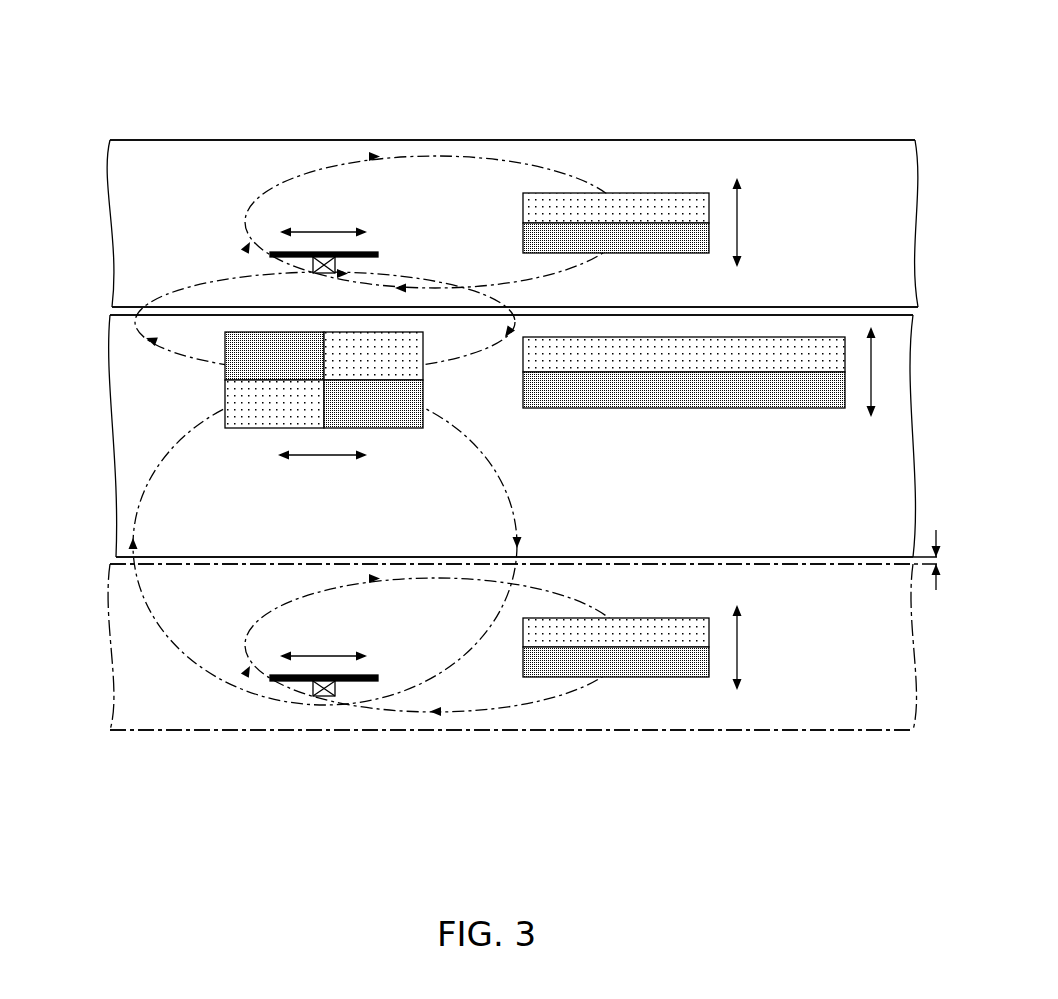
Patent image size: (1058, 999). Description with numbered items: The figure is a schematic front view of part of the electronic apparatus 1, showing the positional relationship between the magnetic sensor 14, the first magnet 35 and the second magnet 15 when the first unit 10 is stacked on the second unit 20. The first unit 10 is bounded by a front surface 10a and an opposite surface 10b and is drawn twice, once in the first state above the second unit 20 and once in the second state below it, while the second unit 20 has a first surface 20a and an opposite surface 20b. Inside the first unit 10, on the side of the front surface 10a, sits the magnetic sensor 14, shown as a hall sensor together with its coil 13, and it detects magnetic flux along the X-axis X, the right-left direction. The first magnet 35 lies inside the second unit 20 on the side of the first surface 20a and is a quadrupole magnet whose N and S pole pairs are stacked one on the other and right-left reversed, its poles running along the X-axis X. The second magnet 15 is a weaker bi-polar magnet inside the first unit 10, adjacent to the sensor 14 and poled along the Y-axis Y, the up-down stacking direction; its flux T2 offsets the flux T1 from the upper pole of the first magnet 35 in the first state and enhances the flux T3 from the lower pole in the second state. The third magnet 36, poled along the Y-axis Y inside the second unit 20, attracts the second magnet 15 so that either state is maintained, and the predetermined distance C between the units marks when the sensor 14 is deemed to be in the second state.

The electronic apparatus 1 is at (178, 104).
The first unit 10 is at (118, 258).
The front surface 10a is at (132, 316).
The upper surface of plate 10 10b is at (145, 140).
The coil 13 is at (370, 252).
The magnetic sensor 14 is at (335, 263).
The second magnet 15 is at (645, 193).
The second unit 20 is at (110, 435).
The first surface 20a is at (843, 315).
The lower surface of plate 20 20b is at (833, 565).
The first magnet 35 is at (225, 385).
The third magnet 36 is at (660, 408).
The predetermined distance C is at (940, 560).
The magnetic flux T1 is at (185, 290).
The magnetic flux T2 is at (362, 162).
The magnetic flux T3 is at (205, 668).
The X-axis X is at (325, 230).
The Y-axis Y is at (737, 225).